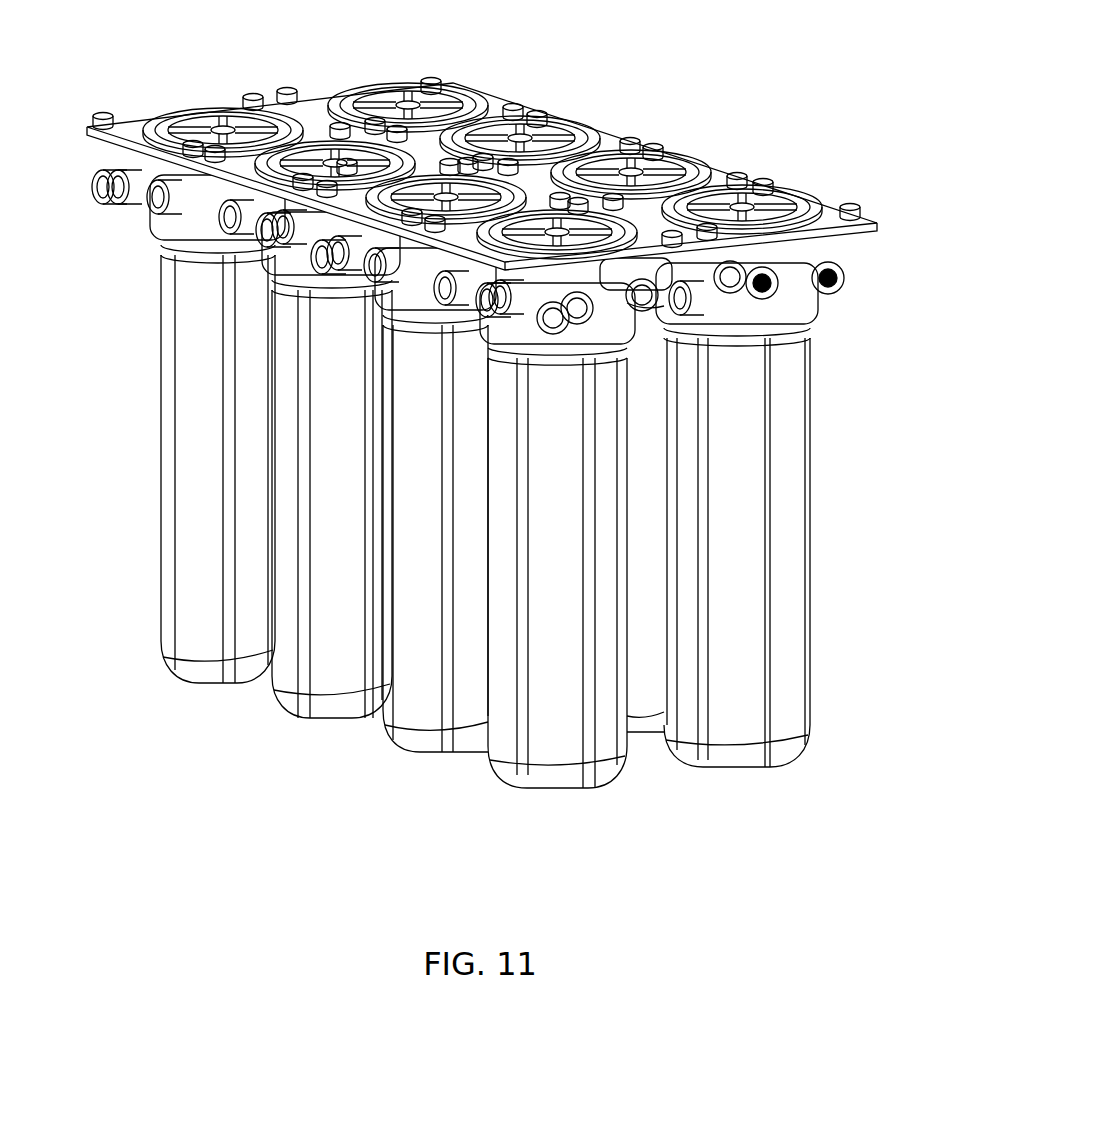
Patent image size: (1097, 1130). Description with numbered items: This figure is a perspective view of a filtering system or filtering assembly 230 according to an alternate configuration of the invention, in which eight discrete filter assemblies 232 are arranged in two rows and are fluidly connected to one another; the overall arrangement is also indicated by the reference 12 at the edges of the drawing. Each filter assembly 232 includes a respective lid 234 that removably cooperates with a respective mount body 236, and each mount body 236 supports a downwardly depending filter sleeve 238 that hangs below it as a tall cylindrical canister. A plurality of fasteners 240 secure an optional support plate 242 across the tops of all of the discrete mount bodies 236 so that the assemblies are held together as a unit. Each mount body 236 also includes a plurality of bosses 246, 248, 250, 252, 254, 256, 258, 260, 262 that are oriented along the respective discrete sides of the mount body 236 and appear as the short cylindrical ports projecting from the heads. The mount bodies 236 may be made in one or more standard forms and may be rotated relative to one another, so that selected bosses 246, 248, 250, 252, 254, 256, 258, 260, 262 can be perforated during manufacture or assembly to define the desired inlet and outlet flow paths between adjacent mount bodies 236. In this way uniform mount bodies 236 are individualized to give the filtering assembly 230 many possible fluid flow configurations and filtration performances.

The water filtration system 12 is at (75, 82).
The filtering assembly 230 is at (703, 82).
The filter assembly 232 is at (207, 93).
The lid 234 is at (780, 193).
The mount body 236 is at (807, 310).
The filter sleeve 238 is at (165, 490).
The fastener 240 is at (95, 118).
The support plate 242 is at (312, 103).
The boss 246 is at (105, 195).
The boss 248 is at (118, 205).
The boss 250 is at (170, 234).
The boss 252 is at (738, 296).
The boss 254 is at (755, 308).
The boss 256 is at (842, 270).
The boss 258 is at (220, 236).
The boss 260 is at (268, 243).
The boss 262 is at (290, 258).